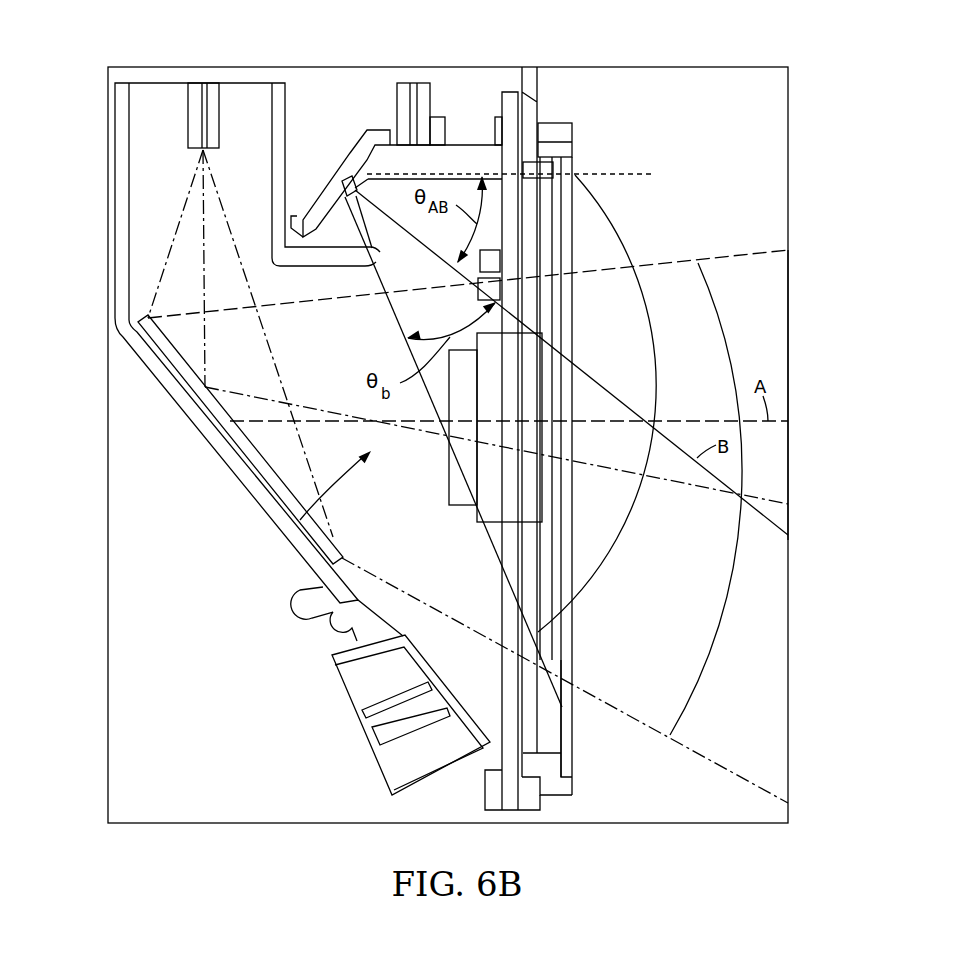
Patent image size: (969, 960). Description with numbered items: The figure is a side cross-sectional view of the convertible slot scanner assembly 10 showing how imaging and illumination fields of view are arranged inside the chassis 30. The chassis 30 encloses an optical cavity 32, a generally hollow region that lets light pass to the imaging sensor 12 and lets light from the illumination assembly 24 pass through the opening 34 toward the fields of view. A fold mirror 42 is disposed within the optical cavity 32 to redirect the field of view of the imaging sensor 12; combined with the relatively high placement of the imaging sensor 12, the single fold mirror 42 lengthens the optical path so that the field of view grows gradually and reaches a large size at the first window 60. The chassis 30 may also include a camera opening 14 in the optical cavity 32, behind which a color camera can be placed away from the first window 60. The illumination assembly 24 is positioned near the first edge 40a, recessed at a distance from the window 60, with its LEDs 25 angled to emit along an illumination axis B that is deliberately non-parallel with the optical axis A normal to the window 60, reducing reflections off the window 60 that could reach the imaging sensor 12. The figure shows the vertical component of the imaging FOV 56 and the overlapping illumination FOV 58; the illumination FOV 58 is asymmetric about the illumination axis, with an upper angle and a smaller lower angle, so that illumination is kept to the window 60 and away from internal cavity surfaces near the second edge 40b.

The convertible slot scanner assembly 10 is at (98, 583).
The imaging sensor 12 is at (188, 121).
The camera opening 14 is at (360, 723).
The illumination assembly 24 is at (339, 148).
The LEDs 25 is at (357, 188).
The chassis body 30 is at (118, 162).
The optical cavity 32 is at (297, 527).
The opening 34 is at (578, 312).
The first edge 40a is at (547, 157).
The second edge 40b is at (545, 743).
The fold mirror 42 is at (176, 358).
The imaging FOV 56 is at (695, 688).
The illumination FOV 58 is at (620, 547).
The first window 60 is at (572, 727).